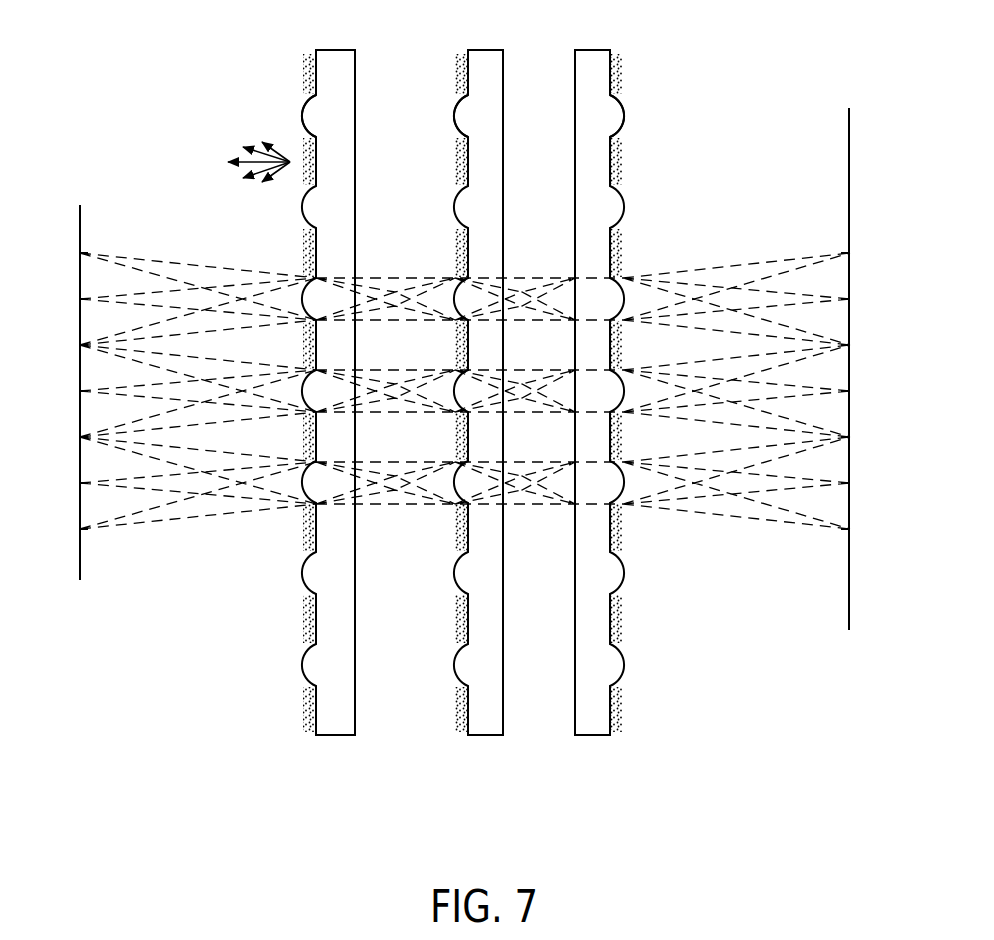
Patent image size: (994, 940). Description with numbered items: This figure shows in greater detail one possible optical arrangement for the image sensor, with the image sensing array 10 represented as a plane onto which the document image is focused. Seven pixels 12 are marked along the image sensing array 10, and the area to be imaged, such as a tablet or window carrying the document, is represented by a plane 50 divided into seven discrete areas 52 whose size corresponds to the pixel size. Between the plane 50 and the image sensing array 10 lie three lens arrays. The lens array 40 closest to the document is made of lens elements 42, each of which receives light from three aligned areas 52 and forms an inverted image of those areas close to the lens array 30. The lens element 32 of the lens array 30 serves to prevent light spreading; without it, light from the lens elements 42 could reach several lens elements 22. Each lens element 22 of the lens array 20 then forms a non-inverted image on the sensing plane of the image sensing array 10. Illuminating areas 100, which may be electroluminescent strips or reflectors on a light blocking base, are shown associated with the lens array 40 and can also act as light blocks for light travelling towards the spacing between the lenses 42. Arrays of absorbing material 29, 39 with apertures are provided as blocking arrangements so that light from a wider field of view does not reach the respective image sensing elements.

The image sensing array 10 is at (849, 603).
The pixels 12 is at (869, 396).
The lens array 20 is at (588, 62).
The lens element 22 is at (617, 117).
The absorbing material 29 is at (623, 75).
The lens array 30 is at (485, 62).
The lens element 32 is at (466, 118).
The absorbing material 39 is at (459, 164).
The lens array 40 is at (337, 60).
The lens element 42 is at (313, 116).
The plane 50 is at (82, 558).
The discrete areas 52 is at (61, 387).
The illuminating areas 100 is at (304, 71).